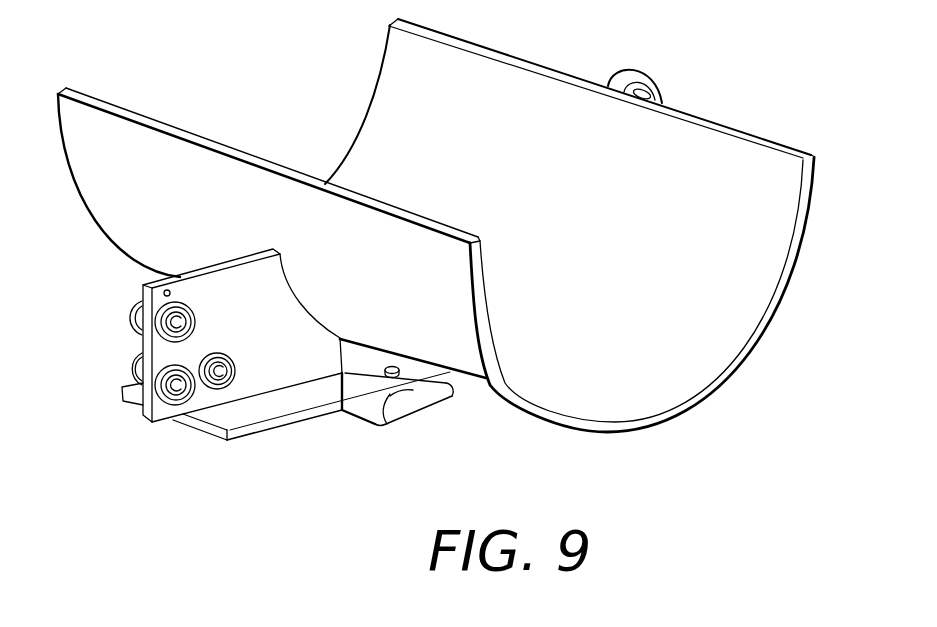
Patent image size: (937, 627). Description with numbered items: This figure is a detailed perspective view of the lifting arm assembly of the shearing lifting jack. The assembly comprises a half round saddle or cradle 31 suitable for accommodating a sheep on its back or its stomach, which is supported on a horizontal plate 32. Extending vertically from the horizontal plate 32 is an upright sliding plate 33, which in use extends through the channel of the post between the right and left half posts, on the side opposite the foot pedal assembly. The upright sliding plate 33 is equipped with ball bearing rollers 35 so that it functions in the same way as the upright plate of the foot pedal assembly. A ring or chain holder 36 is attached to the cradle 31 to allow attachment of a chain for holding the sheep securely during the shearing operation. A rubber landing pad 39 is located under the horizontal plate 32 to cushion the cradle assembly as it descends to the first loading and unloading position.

The cradle 31 is at (676, 376).
The horizontal plate 32 is at (230, 420).
The upright sliding plate 33 is at (225, 280).
The ball bearing rollers 35 is at (158, 321).
The ring or chain holder 36 is at (668, 93).
The rubber landing pad 39 is at (410, 402).